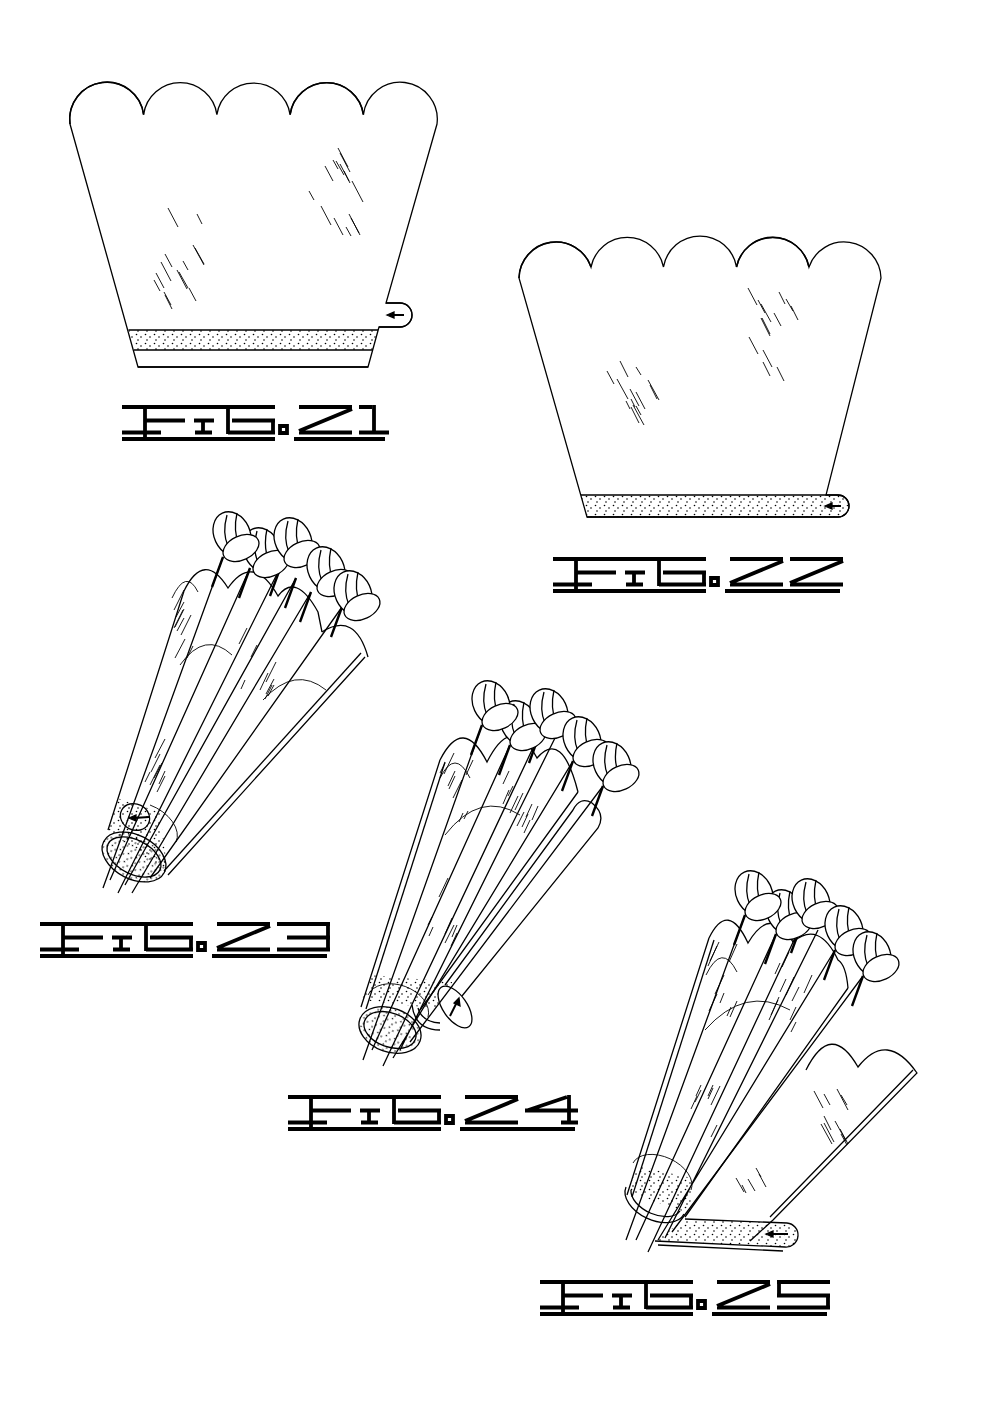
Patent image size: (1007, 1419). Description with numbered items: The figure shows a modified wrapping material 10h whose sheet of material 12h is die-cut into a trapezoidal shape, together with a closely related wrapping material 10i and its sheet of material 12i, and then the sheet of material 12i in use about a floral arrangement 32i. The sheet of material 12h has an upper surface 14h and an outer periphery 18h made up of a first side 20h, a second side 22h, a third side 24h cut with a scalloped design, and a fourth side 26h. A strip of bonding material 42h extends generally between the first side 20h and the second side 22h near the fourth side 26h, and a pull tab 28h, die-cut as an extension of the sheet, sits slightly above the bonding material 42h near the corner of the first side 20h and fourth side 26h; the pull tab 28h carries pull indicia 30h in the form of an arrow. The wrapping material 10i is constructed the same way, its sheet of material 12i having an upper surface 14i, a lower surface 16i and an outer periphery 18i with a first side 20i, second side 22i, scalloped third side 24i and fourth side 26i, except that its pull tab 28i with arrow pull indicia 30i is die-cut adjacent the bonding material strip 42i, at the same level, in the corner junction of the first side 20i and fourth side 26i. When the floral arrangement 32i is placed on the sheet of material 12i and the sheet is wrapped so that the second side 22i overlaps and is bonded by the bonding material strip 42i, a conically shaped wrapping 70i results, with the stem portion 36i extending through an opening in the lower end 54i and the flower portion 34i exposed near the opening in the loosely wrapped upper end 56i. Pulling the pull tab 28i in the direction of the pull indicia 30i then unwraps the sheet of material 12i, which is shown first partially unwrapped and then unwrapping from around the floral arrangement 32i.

In FIG. 21, the wrapping material 10h is at (147, 63).
In FIG. 21, the sheet of material 12h is at (247, 82).
In FIG. 21, the upper surface 14h is at (120, 120).
In FIG. 21, the outer periphery 18h is at (93, 222).
In FIG. 21, the first side 20h is at (436, 147).
In FIG. 21, the second side 22h is at (113, 293).
In FIG. 21, the third side 24h is at (327, 84).
In FIG. 21, the fourth side 26h is at (348, 368).
In FIG. 21, the pull tab 28h is at (397, 305).
In FIG. 21, the pull indicia 30h is at (410, 327).
In FIG. 21, the bonding material 42h is at (140, 342).
In FIG. 22, the wrapping material 10i is at (803, 175).
In FIG. 23, the wrapping material 10i is at (153, 525).
In FIG. 24, the wrapping material 10i is at (665, 678).
In FIG. 22, the sheet of material 12i is at (694, 231).
In FIG. 23, the sheet of material 12i is at (162, 652).
In FIG. 24, the sheet of material 12i is at (420, 823).
In FIG. 25, the sheet of material 12i is at (683, 1010).
In FIG. 22, the upper surface 14i is at (627, 261).
In FIG. 24, the upper surface 14i is at (578, 838).
In FIG. 25, the upper surface 14i is at (837, 1060).
In FIG. 23, the lower surface 16i is at (201, 587).
In FIG. 24, the lower surface 16i is at (456, 760).
In FIG. 25, the lower surface 16i is at (718, 952).
In FIG. 22, the outer periphery 18i is at (545, 373).
In FIG. 22, the first side 20i is at (852, 399).
In FIG. 22, the second side 22i is at (562, 444).
In FIG. 22, the third side 24i is at (772, 239).
In FIG. 22, the fourth side 26i is at (595, 519).
In FIG. 22, the pull tab 28i is at (835, 494).
In FIG. 23, the pull tab 28i is at (140, 810).
In FIG. 24, the pull tab 28i is at (467, 1012).
In FIG. 25, the pull tab 28i is at (789, 1224).
In FIG. 22, the pull indicia 30i is at (846, 512).
In FIG. 23, the pull indicia 30i is at (147, 818).
In FIG. 24, the pull indicia 30i is at (460, 1028).
In FIG. 25, the pull indicia 30i is at (790, 1243).
In FIG. 23, the floral arrangement 32i is at (303, 517).
In FIG. 24, the floral arrangement 32i is at (561, 687).
In FIG. 25, the floral arrangement 32i is at (823, 876).
In FIG. 23, the flower portion 34i is at (341, 561).
In FIG. 24, the flower portion 34i is at (600, 735).
In FIG. 25, the flower portion 34i is at (853, 912).
In FIG. 23, the stem portion 36i is at (105, 875).
In FIG. 24, the stem portion 36i is at (363, 1051).
In FIG. 25, the stem portion 36i is at (630, 1232).
In FIG. 22, the bonding material strip 42i is at (599, 503).
In FIG. 23, the bonding material strip 42i is at (142, 836).
In FIG. 24, the bonding material strip 42i is at (457, 987).
In FIG. 25, the bonding material strip 42i is at (716, 1237).
In FIG. 23, the lower end 54i is at (158, 882).
In FIG. 23, the upper end 56i is at (357, 634).
In FIG. 23, the wrapping 70i is at (232, 805).
In FIG. 24, the wrapping 70i is at (401, 885).
In FIG. 25, the wrapping 70i is at (670, 1057).